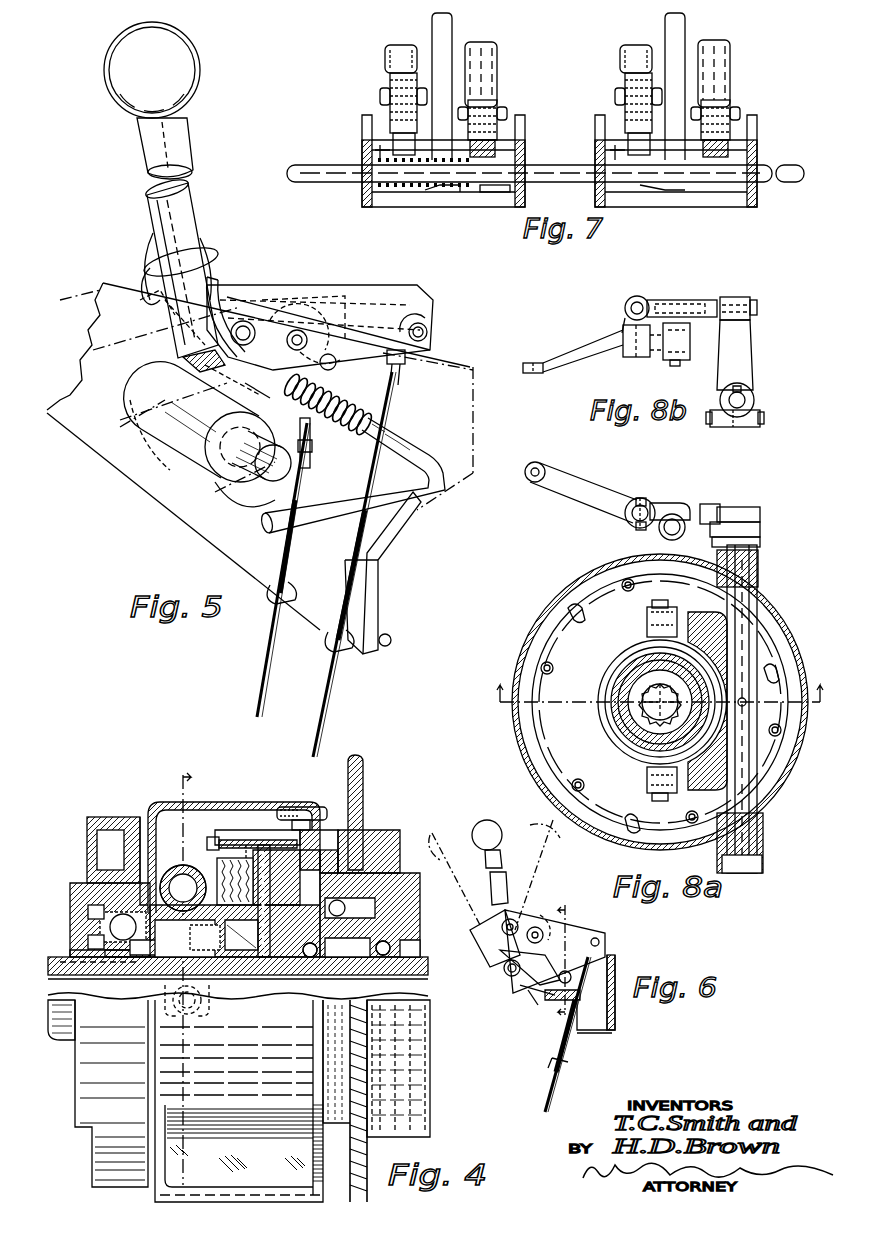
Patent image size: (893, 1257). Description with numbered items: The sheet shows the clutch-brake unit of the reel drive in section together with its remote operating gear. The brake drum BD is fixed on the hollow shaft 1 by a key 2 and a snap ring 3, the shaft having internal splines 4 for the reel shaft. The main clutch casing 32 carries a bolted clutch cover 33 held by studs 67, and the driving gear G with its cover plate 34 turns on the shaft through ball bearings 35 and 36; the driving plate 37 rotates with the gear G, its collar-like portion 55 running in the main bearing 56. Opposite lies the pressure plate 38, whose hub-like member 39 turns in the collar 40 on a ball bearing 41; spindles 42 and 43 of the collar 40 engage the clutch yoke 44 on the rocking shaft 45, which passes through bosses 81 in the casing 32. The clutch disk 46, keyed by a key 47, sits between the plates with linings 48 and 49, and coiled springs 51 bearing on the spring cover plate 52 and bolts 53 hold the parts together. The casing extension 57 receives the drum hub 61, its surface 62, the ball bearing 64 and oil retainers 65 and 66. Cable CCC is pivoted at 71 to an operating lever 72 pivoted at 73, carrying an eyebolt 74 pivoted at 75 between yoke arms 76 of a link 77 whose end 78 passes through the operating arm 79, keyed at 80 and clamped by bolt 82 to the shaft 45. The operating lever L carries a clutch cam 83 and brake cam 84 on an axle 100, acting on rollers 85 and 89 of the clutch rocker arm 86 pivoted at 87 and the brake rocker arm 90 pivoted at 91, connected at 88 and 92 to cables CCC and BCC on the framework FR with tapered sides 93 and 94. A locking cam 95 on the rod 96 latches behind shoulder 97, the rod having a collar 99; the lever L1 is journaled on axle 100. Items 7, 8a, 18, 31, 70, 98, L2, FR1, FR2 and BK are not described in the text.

In FIG. 8A, the hollow shaft 1 is at (630, 732).
In FIG. 4, the hollow shaft 1 is at (55, 968).
In FIG. 4, the key 2 is at (85, 977).
In FIG. 4, the snap ring 3 is at (78, 962).
In FIG. 8A, the internal splines 4 is at (659, 704).
In FIG. 6, the section line 7 is at (565, 967).
In FIG. 4, the section line 8a is at (193, 971).
In FIG. 4, the motor end cap 18 is at (62, 1045).
In FIG. 8A, the hub 31 is at (618, 683).
In FIG. 8A, the main clutch casing 32 is at (540, 618).
In FIG. 4, the main clutch casing 32 is at (193, 806).
In FIG. 4, the clutch cover 33 is at (310, 808).
In FIG. 4, the cover plate 34 is at (415, 958).
In FIG. 4, the ball bearing 35 is at (380, 965).
In FIG. 4, the ball bearing 36 is at (310, 965).
In FIG. 4, the driving plate 37 is at (330, 860).
In FIG. 4, the pressure plate 38 is at (228, 835).
In FIG. 4, the hub-like member 39 is at (157, 975).
In FIG. 8A, the collar 40 is at (605, 718).
In FIG. 4, the collar 40 is at (220, 886).
In FIG. 4, the ball bearing 41 is at (205, 970).
In FIG. 8A, the spindle 42 is at (660, 608).
In FIG. 8A, the spindle 43 is at (665, 795).
In FIG. 8A, the clutch yoke 44 is at (767, 645).
In FIG. 4, the clutch yoke 44 is at (183, 886).
In FIG. 8B, the rocking shaft 45 is at (742, 401).
In FIG. 8A, the rocking shaft 45 is at (750, 772).
In FIG. 4, the rocking shaft 45 is at (183, 866).
In FIG. 4, the clutch disk 46 is at (268, 968).
In FIG. 4, the key 47 is at (245, 972).
In FIG. 4, the disk lining 48 is at (250, 840).
In FIG. 4, the disk lining 49 is at (295, 808).
In FIG. 4, the coiled spring 51 is at (255, 840).
In FIG. 8A, the spring cover plate 52 is at (545, 731).
In FIG. 4, the spring cover plate 52 is at (218, 840).
In FIG. 8A, the bolt 53 is at (540, 660).
In FIG. 4, the bolt 53 is at (283, 812).
In FIG. 4, the collar-like portion 55 is at (345, 970).
In FIG. 4, the main bearing 56 is at (342, 903).
In FIG. 4, the collar-like extension 57 is at (131, 830).
In FIG. 4, the central hub 61 is at (108, 972).
In FIG. 4, the outer surface of larger diameter 62 is at (90, 940).
In FIG. 4, the ball bearing 64 is at (122, 918).
In FIG. 4, the oil retaining member 65 is at (130, 972).
In FIG. 4, the oil retainer 66 is at (90, 913).
In FIG. 4, the stud 67 is at (322, 816).
In FIG. 8A, the notch 70 is at (577, 620).
In FIG. 8B, the pivotal connection 71 is at (530, 363).
In FIG. 8A, the pivotal connection 71 is at (535, 465).
In FIG. 8B, the operating lever 72 is at (590, 345).
In FIG. 8A, the operating lever 72 is at (600, 492).
In FIG. 8B, the pivot 73 is at (668, 360).
In FIG. 8A, the pivot 73 is at (678, 533).
In FIG. 8B, the eyebolt 74 is at (628, 312).
In FIG. 8A, the eyebolt 74 is at (626, 515).
In FIG. 8A, the pivot 75 is at (641, 500).
In FIG. 8B, the yoke arms 76 is at (638, 300).
In FIG. 8A, the yoke arms 76 is at (660, 505).
In FIG. 8B, the link 77 is at (720, 300).
In FIG. 8B, the end portion 78 is at (757, 308).
In FIG. 8A, the end portion 78 is at (760, 512).
In FIG. 8B, the operating arm 79 is at (733, 348).
In FIG. 8A, the operating arm 79 is at (758, 550).
In FIG. 8B, the key 80 is at (745, 392).
In FIG. 8A, the boss 81 is at (758, 576).
In FIG. 8B, the bolt 82 is at (760, 418).
In FIG. 8A, the bolt 82 is at (760, 531).
In FIG. 7, the clutch-actuating cam 83 is at (400, 135).
In FIG. 5, the clutch-actuating cam 83 is at (200, 430).
In FIG. 6, the clutch-actuating cam 83 is at (515, 987).
In FIG. 7, the brake-actuating cam 84 is at (505, 140).
In FIG. 5, the brake-actuating cam 84 is at (200, 375).
In FIG. 6, the brake-actuating cam 84 is at (525, 992).
In FIG. 7, the roller 85 is at (400, 84).
In FIG. 5, the roller 85 is at (295, 330).
In FIG. 6, the roller 85 is at (537, 928).
In FIG. 7, the clutch rocker arm 86 is at (395, 62).
In FIG. 5, the clutch rocker arm 86 is at (312, 290).
In FIG. 6, the clutch rocker arm 86 is at (580, 933).
In FIG. 5, the pivot 87 is at (245, 322).
In FIG. 6, the pivot 87 is at (500, 927).
In FIG. 5, the connection 88 is at (425, 333).
In FIG. 6, the connection 88 is at (600, 943).
In FIG. 7, the roller 89 is at (487, 112).
In FIG. 5, the roller 89 is at (187, 362).
In FIG. 6, the roller 89 is at (548, 913).
In FIG. 7, the brake rocker arm 90 is at (483, 61).
In FIG. 5, the brake rocker arm 90 is at (215, 292).
In FIG. 6, the brake rocker arm 90 is at (608, 966).
In FIG. 5, the pivot 91 is at (160, 290).
In FIG. 5, the connection 92 is at (340, 365).
In FIG. 5, the tapered side 93 is at (215, 492).
In FIG. 5, the tapered side 94 is at (120, 427).
In FIG. 7, the locking cam 95 is at (505, 190).
In FIG. 5, the locking cam 95 is at (308, 448).
In FIG. 6, the locking cam 95 is at (530, 1001).
In FIG. 7, the locking rod 96 is at (338, 170).
In FIG. 5, the locking rod 96 is at (405, 454).
In FIG. 6, the locking rod 96 is at (560, 983).
In FIG. 7, the latch shoulder 97 is at (442, 195).
In FIG. 7, the spring 98 is at (393, 190).
In FIG. 5, the spring 98 is at (357, 423).
In FIG. 7, the collar 99 is at (652, 190).
In FIG. 5, the axle 100 is at (245, 505).
In FIG. 6, the axle 100 is at (505, 972).
In FIG. 5, the operating lever L is at (190, 132).
In FIG. 6, the operating lever L is at (498, 853).
In FIG. 7, the lever L1 is at (443, 30).
In FIG. 7, the lever L2 is at (677, 28).
In FIG. 5, the framework FR is at (105, 330).
In FIG. 6, the framework FR is at (615, 1022).
In FIG. 7, the frame FR1 is at (362, 197).
In FIG. 7, the frame FR2 is at (598, 193).
In FIG. 5, the bracket BK is at (373, 585).
In FIG. 6, the bracket BK is at (585, 1038).
In FIG. 5, the remote control cable BCC is at (255, 708).
In FIG. 5, the remote control cable CCC is at (310, 748).
In FIG. 6, the remote control cable CCC is at (545, 1108).
In FIG. 4, the brake drum BD is at (105, 818).
In FIG. 4, the clutch driving gear G is at (362, 781).